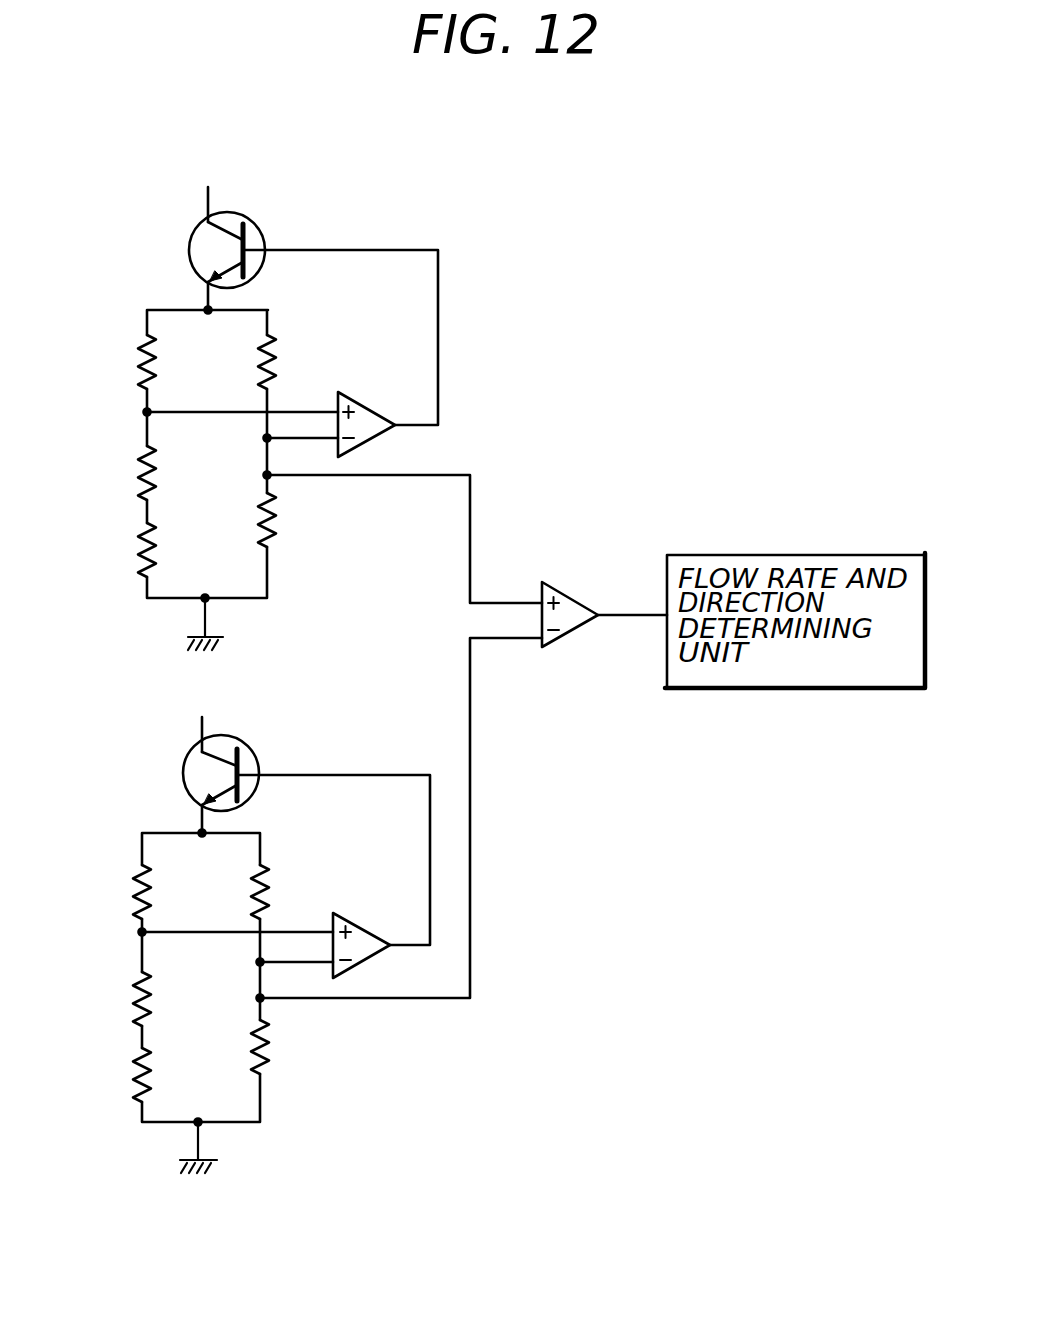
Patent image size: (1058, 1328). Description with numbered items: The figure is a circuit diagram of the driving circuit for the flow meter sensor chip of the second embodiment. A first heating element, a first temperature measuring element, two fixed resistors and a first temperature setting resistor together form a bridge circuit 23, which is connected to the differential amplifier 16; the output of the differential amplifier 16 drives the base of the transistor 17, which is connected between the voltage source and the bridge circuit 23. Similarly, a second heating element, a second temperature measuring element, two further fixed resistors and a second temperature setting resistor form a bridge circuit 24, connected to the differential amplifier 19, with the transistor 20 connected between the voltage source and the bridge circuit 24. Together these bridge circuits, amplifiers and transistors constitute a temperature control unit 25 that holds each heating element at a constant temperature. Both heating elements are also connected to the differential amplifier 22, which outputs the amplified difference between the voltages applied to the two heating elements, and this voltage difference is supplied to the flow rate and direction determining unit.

The differential amplifier 16 is at (362, 402).
The transistor 17 is at (247, 217).
The differential amplifier 19 is at (358, 918).
The transistor 20 is at (253, 749).
The differential amplifier 22 is at (573, 633).
The bridge circuit 23 is at (175, 322).
The bridge circuit 24 is at (175, 1083).
The temperature control unit 25 is at (428, 565).